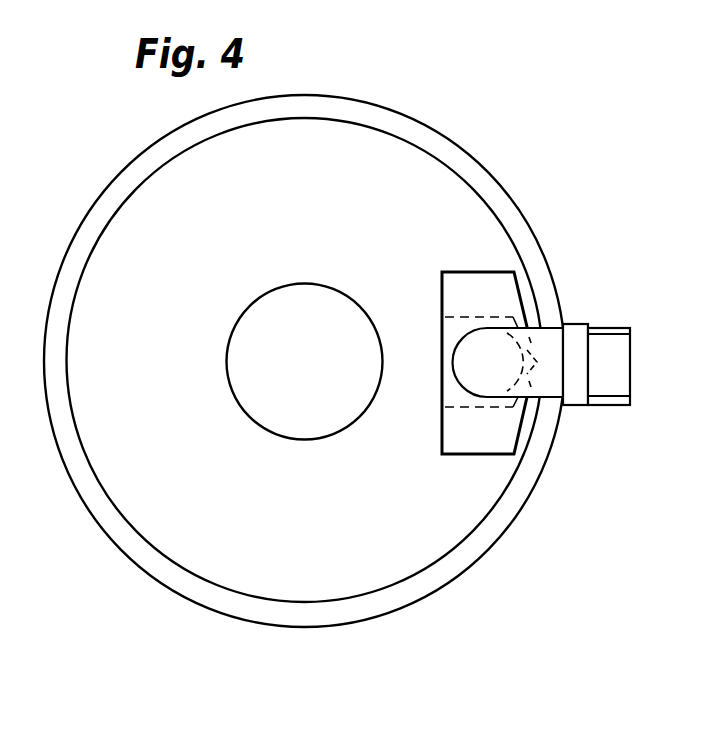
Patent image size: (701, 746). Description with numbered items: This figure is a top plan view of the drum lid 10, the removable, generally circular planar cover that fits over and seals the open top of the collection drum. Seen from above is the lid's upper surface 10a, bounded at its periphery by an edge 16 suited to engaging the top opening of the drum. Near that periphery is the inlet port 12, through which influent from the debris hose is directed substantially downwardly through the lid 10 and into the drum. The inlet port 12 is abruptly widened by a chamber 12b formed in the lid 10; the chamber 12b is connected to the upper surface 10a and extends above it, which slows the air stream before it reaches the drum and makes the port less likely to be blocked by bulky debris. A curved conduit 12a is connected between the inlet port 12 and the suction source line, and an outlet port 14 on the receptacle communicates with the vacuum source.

The lid 10 is at (517, 172).
The upper surface 10a is at (205, 242).
The inlet port 12 is at (496, 355).
The curved conduit 12a is at (523, 410).
The chamber 12b is at (440, 298).
The outlet port 14 is at (308, 377).
The edge 16 is at (281, 120).